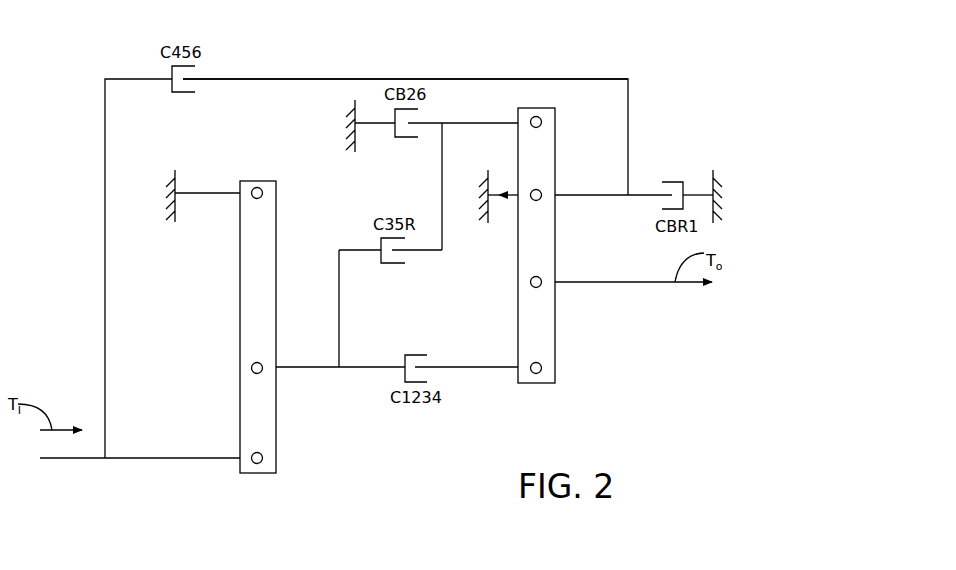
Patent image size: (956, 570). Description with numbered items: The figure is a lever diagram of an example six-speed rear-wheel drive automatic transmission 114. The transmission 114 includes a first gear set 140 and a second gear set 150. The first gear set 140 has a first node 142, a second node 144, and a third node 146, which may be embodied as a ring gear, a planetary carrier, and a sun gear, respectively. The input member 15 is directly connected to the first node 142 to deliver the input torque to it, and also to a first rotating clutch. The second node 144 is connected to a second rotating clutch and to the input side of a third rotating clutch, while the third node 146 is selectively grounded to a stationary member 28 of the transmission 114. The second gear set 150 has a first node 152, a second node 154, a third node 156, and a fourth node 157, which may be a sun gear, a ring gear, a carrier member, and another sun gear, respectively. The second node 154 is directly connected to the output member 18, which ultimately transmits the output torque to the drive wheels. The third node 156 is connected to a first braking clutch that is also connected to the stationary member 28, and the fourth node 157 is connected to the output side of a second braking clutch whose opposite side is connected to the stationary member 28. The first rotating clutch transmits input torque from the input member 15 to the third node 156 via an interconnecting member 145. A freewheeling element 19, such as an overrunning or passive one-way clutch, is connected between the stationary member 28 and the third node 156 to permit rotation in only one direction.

The transmission 114 is at (642, 46).
The interconnecting member 145 is at (470, 79).
The input member 15 is at (88, 462).
The first gear set 140 is at (240, 326).
The third node 146 is at (250, 190).
The second node 144 is at (258, 374).
The first node 142 is at (258, 464).
The stationary member 28 is at (165, 204).
The freewheeling element 19 is at (495, 210).
The second gear set 150 is at (556, 258).
The fourth node 157 is at (540, 118).
The third node 156 is at (538, 190).
The second node 154 is at (538, 289).
The first node 152 is at (538, 375).
The output member 18 is at (623, 286).